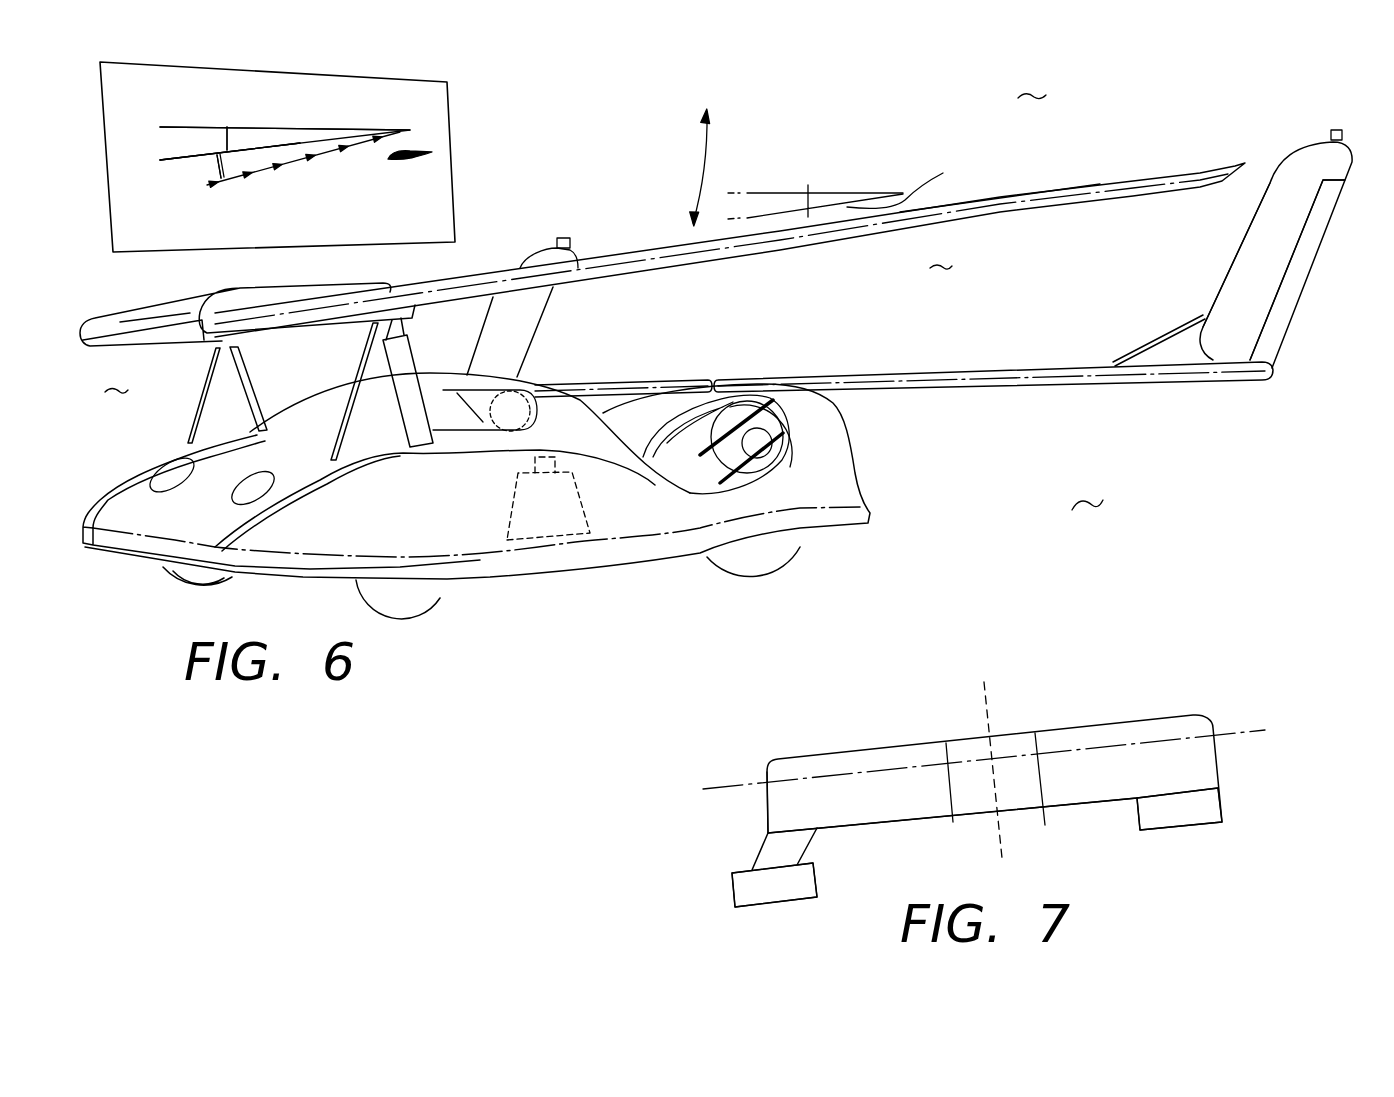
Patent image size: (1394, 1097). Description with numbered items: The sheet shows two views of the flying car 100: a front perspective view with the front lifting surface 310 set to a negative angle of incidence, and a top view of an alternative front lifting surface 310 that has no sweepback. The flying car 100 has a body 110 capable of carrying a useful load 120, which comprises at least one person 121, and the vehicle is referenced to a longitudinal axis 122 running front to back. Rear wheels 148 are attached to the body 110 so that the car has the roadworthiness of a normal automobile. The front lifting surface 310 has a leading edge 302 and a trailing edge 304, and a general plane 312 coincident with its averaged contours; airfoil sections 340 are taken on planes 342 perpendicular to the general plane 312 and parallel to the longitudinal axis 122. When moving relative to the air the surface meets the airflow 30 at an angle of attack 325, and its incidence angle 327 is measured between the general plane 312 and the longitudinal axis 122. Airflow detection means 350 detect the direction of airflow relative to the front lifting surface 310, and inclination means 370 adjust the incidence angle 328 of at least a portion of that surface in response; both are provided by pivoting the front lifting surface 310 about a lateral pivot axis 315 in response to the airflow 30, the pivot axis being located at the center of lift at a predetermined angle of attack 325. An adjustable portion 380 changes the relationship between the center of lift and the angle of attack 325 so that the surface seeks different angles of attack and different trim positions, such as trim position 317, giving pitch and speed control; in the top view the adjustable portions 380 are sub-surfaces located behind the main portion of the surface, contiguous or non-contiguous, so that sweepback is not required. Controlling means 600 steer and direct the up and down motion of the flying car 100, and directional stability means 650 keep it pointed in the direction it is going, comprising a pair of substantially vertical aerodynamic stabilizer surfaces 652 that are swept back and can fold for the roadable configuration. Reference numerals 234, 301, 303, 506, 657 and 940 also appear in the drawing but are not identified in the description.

In FIG. 6, the airflow 30 is at (300, 163).
In FIG. 6, the flying car 100 is at (1100, 520).
In FIG. 6, the body 110 is at (467, 519).
In FIG. 6, the useful load 120 is at (548, 510).
In FIG. 6, the person 121 is at (507, 430).
In FIG. 6, the longitudinal axis 122 is at (275, 125).
In FIG. 6, the rear wheels 148 is at (760, 565).
In FIG. 6, the ducted fan 234 is at (780, 440).
In FIG. 7, the right wing segment 301 is at (1203, 813).
In FIG. 7, the leading edge 302 is at (1068, 725).
In FIG. 7, the left wing segment 303 is at (747, 887).
In FIG. 6, the trailing edge 304 is at (433, 157).
In FIG. 7, the trailing edge 304 is at (933, 821).
In FIG. 7, the front lifting surface 310 is at (901, 802).
In FIG. 6, the general plane 312 is at (180, 158).
In FIG. 7, the lateral pivot axis 315 is at (737, 783).
In FIG. 6, the trim position 317 is at (805, 197).
In FIG. 6, the angle of attack 325 is at (213, 168).
In FIG. 6, the incidence angle 327 is at (219, 166).
In FIG. 6, the incidence angle 328 is at (225, 137).
In FIG. 6, the airfoil sections 340 is at (408, 150).
In FIG. 6, the planes 342 is at (417, 122).
In FIG. 6, the airflow detection means 350 is at (1025, 79).
In FIG. 7, the airflow detection means 350 is at (774, 885).
In FIG. 6, the inclination means 370 is at (699, 140).
In FIG. 6, the adjustable portion 380 is at (1135, 212).
In FIG. 6, the strut assembly 506 is at (525, 349).
In FIG. 6, the controlling means 600 is at (1287, 310).
In FIG. 6, the directional stability means 650 is at (1282, 245).
In FIG. 6, the vertical aerodynamic stabilizer surfaces 652 is at (1250, 223).
In FIG. 6, the tail brace 657 is at (1148, 333).
In FIG. 6, the sensor 940 is at (558, 238).